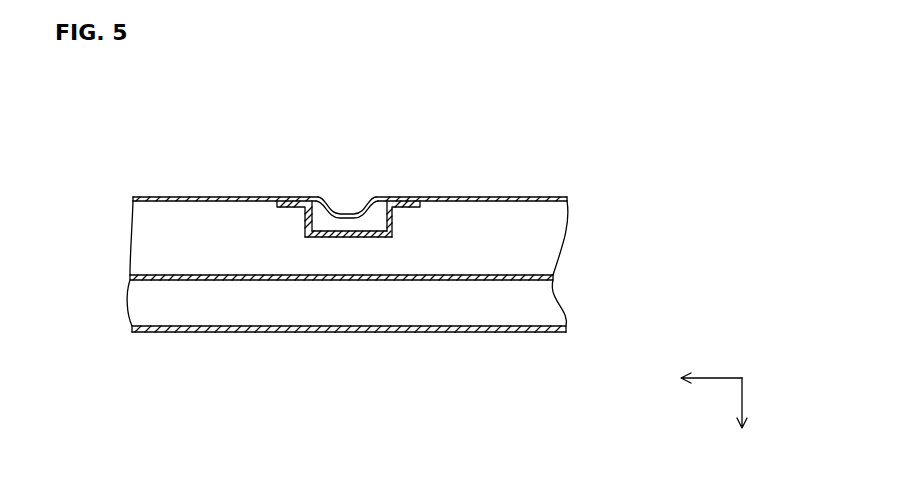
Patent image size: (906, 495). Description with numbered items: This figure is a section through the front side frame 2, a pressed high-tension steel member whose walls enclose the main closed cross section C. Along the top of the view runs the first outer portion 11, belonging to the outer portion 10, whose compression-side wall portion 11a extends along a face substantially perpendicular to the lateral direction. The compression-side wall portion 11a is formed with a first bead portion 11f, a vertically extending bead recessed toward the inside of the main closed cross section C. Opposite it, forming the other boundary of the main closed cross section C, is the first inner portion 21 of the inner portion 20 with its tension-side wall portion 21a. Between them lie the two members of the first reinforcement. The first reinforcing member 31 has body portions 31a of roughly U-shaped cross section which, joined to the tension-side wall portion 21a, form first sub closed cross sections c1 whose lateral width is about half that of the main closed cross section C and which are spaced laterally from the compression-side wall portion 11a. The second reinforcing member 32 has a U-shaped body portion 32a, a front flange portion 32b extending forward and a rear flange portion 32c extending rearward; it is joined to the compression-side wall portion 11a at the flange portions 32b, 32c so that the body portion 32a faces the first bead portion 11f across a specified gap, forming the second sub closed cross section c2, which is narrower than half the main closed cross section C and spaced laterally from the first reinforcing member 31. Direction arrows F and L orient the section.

The front side frame 2 is at (511, 146).
The first panel member 10 is at (190, 196).
The first outer portion 11 is at (350, 179).
The compression-side wall portion 11a is at (160, 197).
The first bead portion 11f is at (341, 212).
The second sub closed cross section c2 is at (323, 214).
The second reinforcing member 32 is at (368, 228).
The body portion 32a is at (354, 237).
The front flange portion 32b is at (288, 207).
The rear flange portion 32c is at (407, 208).
The main closed cross section C is at (520, 221).
The first reinforcing member 31 is at (463, 283).
The body portion 31a is at (218, 281).
The first sub closed cross section c1 is at (363, 319).
The second panel member 20 is at (205, 335).
The first inner portion 21 is at (349, 356).
The tension-side wall portion 21a is at (150, 333).
The vehicle front direction F is at (716, 378).
The vehicle lower direction L is at (743, 397).